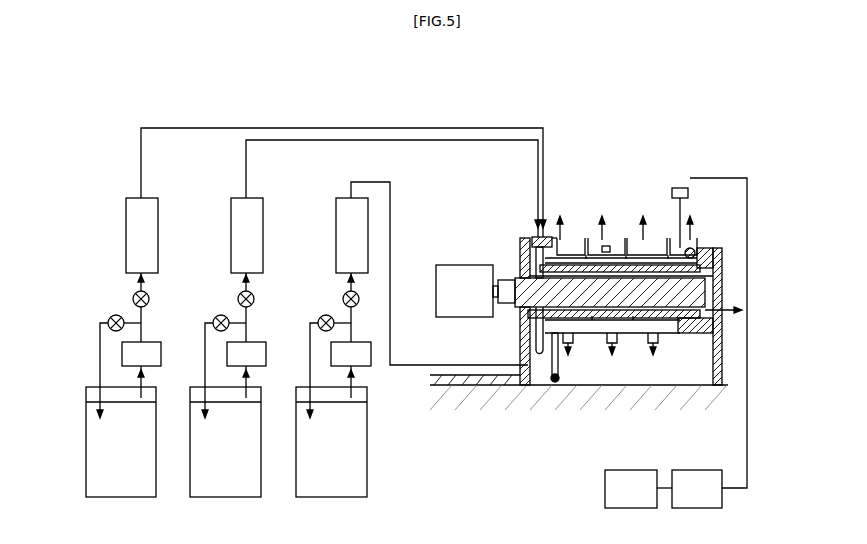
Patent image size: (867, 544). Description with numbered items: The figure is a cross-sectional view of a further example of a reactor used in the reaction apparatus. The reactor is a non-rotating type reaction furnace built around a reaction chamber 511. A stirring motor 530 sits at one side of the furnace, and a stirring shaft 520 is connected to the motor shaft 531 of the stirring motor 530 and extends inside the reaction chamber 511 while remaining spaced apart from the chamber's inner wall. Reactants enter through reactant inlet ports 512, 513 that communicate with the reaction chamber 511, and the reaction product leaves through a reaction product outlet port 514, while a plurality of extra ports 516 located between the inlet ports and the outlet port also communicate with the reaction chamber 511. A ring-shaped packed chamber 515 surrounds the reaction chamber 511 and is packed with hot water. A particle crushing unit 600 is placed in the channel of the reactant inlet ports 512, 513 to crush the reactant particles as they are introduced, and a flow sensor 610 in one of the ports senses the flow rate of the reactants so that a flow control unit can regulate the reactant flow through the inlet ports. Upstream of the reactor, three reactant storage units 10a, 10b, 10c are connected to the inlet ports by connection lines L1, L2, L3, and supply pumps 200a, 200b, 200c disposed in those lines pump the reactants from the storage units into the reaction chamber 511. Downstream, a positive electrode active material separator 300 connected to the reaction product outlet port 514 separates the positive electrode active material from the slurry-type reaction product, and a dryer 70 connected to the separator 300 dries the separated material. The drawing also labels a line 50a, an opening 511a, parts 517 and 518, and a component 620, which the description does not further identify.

The connection line L1 is at (143, 157).
The connection line L2 is at (248, 157).
The connection line L3 is at (392, 190).
The reactant storage unit 10a is at (142, 490).
The reactant storage unit 10b is at (247, 490).
The reactant storage unit 10c is at (352, 490).
The supply pump 200a is at (160, 340).
The supply pump 200b is at (265, 340).
The supply pump 200c is at (348, 342).
The supply pipe 50a is at (547, 220).
The reaction chamber 511 is at (748, 236).
The outlet 511a is at (740, 305).
The reactant inlet port 512 is at (532, 234).
The reactant inlet port 513 is at (545, 386).
The reaction product outlet port 514 is at (701, 248).
The packed chamber 515 is at (637, 228).
The extra port 516 is at (565, 225).
The upper manifold 517 is at (662, 257).
The lower nozzle 518 is at (613, 344).
The stirring shaft 520 is at (530, 322).
The stirring motor 530 is at (437, 307).
The motor shaft 531 is at (495, 293).
The particle crushing unit 600 is at (531, 241).
The flow sensor 610 is at (693, 250).
The sensor 620 is at (678, 188).
The dryer 70 is at (630, 476).
The positive electrode active material separator 300 is at (693, 477).